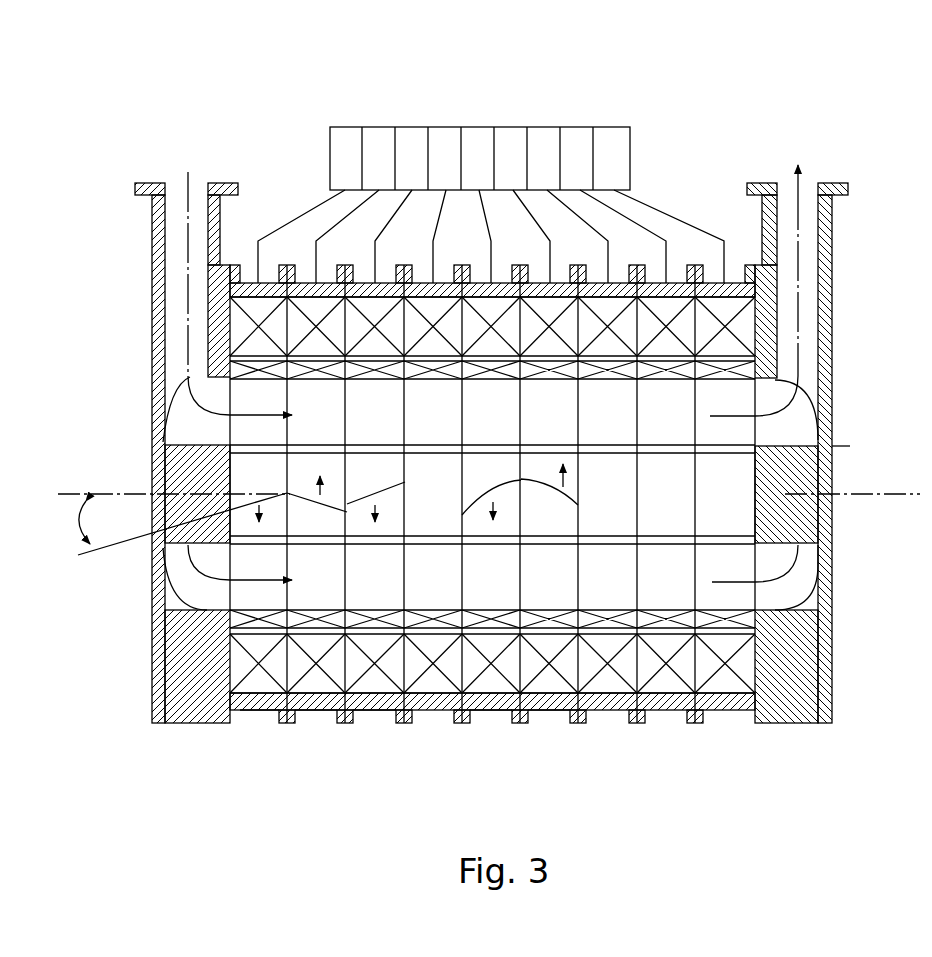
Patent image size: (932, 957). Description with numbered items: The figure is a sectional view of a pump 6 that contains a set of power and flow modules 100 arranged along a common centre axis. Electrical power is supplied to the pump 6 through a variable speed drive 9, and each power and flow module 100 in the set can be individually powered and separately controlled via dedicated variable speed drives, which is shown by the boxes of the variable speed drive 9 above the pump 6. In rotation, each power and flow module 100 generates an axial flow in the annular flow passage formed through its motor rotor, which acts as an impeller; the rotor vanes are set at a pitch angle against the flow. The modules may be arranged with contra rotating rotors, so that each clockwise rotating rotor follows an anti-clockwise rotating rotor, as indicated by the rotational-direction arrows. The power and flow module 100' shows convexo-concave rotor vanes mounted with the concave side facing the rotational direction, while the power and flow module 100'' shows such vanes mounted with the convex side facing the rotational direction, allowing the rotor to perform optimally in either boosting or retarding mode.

The pump 6 is at (266, 124).
The variable speed drive 9 is at (540, 110).
The power and flow module 100 is at (318, 764).
The power and flow module 100' is at (476, 755).
The power and flow module 100'' is at (572, 755).